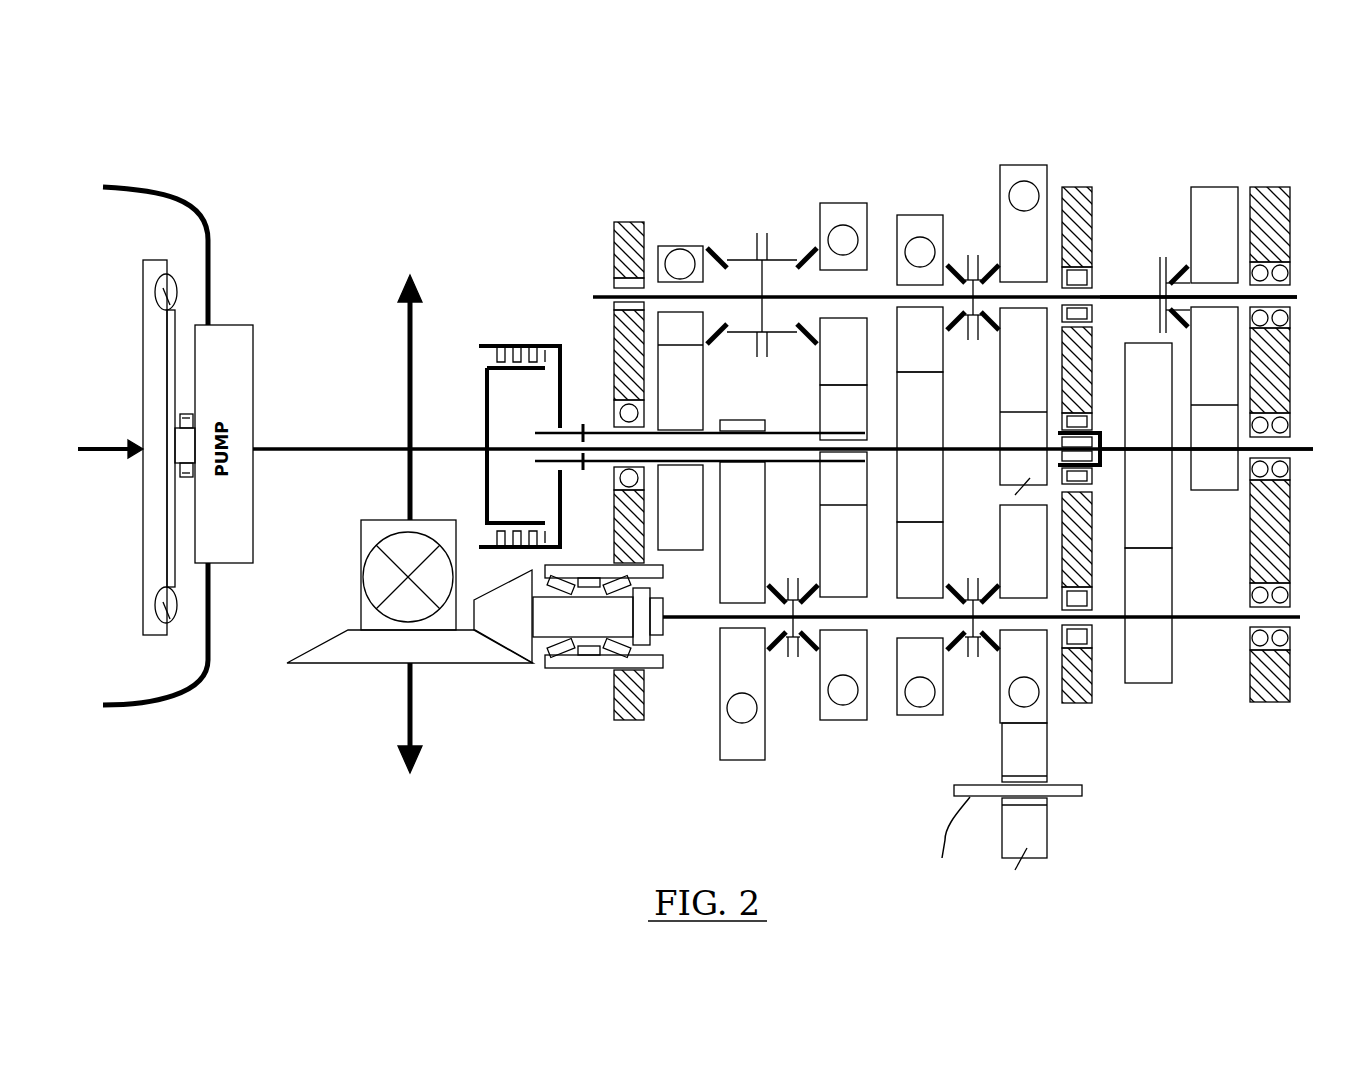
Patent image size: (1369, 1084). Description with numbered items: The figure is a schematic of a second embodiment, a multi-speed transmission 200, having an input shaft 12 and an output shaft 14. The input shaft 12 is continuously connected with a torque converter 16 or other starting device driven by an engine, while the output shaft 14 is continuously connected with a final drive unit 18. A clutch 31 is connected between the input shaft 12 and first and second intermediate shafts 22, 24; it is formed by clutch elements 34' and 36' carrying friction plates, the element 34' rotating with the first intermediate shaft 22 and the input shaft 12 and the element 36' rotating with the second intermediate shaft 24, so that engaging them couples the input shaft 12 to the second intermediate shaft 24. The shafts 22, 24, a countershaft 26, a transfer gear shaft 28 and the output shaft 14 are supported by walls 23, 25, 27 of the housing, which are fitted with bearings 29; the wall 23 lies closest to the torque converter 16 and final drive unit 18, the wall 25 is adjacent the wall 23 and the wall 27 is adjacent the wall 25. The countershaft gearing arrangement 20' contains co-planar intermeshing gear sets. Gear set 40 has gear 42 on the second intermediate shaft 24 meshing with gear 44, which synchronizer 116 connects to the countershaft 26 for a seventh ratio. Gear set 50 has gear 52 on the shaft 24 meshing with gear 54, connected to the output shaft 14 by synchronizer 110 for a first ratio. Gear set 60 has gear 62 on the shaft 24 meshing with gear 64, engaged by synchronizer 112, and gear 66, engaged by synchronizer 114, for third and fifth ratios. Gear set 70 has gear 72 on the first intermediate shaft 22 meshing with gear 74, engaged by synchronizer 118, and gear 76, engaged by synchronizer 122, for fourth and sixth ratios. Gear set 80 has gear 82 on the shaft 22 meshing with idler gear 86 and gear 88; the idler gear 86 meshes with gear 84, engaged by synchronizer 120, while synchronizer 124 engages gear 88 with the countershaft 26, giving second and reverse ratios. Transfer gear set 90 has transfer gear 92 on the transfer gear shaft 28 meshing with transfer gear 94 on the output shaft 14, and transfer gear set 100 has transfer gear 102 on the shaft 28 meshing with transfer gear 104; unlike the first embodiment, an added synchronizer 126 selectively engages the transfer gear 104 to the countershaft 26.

The multi-speed transmission 200 is at (255, 195).
The torque converter 16 is at (140, 562).
The input shaft 12 is at (300, 455).
The clutch 31 is at (450, 298).
The clutch element 34' is at (498, 423).
The clutch element 36' is at (517, 422).
The first intermediate shaft 22 is at (603, 438).
The second intermediate shaft 24 is at (780, 465).
The countershaft gearing arrangement 20' is at (945, 226).
The countershaft 26 is at (1113, 296).
The transfer gear shaft 28 is at (1183, 452).
The bearings 29 is at (617, 283).
The first wall 23 is at (627, 722).
The second wall 25 is at (1078, 705).
The third wall 27 is at (1265, 705).
The gear set 40 is at (658, 358).
The gear 44 is at (668, 341).
The gear 42 is at (668, 528).
The synchronizer 116 is at (714, 253).
The synchronizer 114 is at (776, 341).
The gear 52 is at (746, 420).
The gear set 50 is at (746, 647).
The gear 54 is at (730, 671).
The synchronizer 112 is at (812, 582).
The synchronizer 110 is at (776, 652).
The gear set 60 is at (870, 426).
The gear 66 is at (831, 369).
The gear 62 is at (831, 423).
The gear 64 is at (831, 576).
The gear set 70 is at (921, 503).
The gear 76 is at (908, 356).
The gear 72 is at (908, 428).
The gear 74 is at (908, 576).
The synchronizer 124 is at (988, 266).
The synchronizer 122 is at (957, 332).
The synchronizer 120 is at (989, 582).
The synchronizer 118 is at (957, 652).
The gear set 80 is at (1024, 482).
The gear 88 is at (1012, 266).
The gear 82 is at (1012, 443).
The gear 84 is at (1012, 576).
The idler gear 86 is at (1012, 844).
The transfer gear set 90 is at (1150, 551).
The transfer gear 92 is at (1136, 399).
The transfer gear 94 is at (1136, 601).
The synchronizer 126 is at (1181, 266).
The transfer gear set 100 is at (1243, 304).
The transfer gear 104 is at (1198, 246).
The transfer gear 102 is at (1198, 479).
The output shaft 14 is at (700, 612).
The final drive unit 18 is at (558, 692).